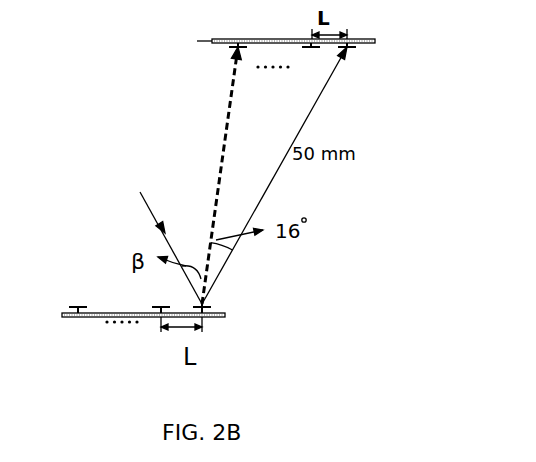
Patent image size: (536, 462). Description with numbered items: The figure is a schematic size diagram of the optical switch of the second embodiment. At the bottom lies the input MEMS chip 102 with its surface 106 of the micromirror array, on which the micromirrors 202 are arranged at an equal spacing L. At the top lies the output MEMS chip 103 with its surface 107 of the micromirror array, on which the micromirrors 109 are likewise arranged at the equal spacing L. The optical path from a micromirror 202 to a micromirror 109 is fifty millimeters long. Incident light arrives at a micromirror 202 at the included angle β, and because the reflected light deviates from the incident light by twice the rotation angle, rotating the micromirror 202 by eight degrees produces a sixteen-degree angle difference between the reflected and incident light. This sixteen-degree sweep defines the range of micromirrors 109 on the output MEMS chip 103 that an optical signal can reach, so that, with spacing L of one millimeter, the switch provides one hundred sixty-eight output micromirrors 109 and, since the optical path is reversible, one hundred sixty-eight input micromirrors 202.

The input MEMS chip 102 is at (225, 315).
The output MEMS chip 103 is at (225, 44).
The surface of micromirror array on input MEMS chip 106 is at (213, 312).
The surface of micromirror array on output MEMS chip 107 is at (232, 52).
The micromirrors of micromirror array on output MEMS chip 109 is at (212, 175).
The micromirrors of micromirror array on input MEMS chip 202 is at (80, 307).